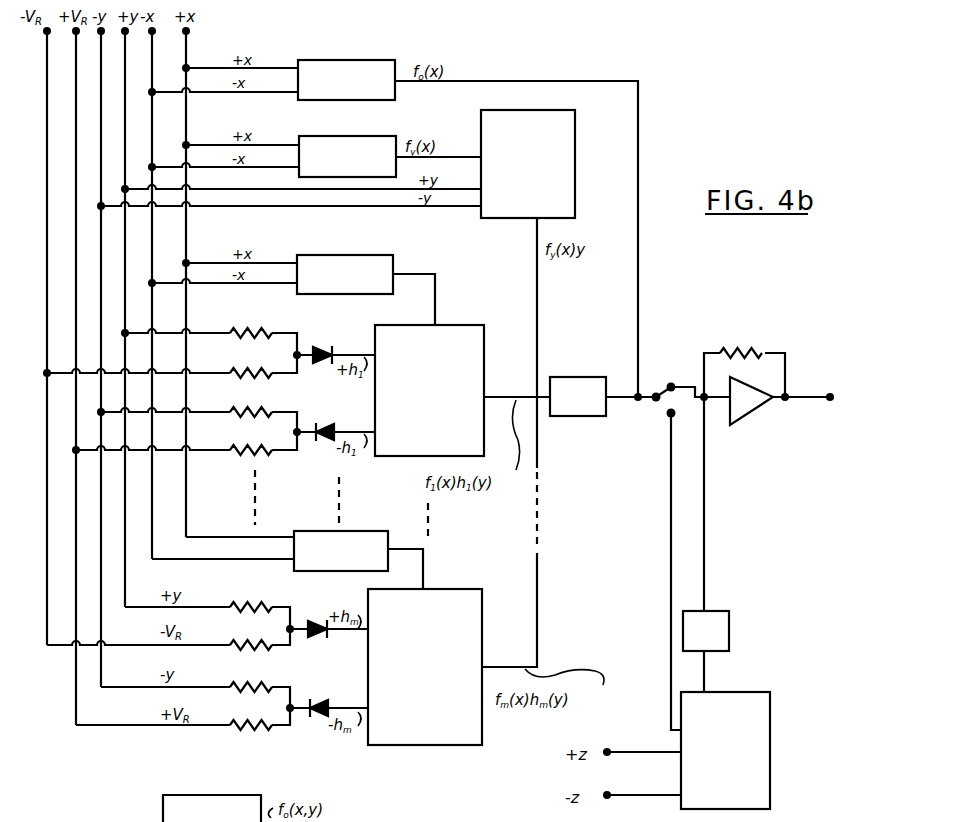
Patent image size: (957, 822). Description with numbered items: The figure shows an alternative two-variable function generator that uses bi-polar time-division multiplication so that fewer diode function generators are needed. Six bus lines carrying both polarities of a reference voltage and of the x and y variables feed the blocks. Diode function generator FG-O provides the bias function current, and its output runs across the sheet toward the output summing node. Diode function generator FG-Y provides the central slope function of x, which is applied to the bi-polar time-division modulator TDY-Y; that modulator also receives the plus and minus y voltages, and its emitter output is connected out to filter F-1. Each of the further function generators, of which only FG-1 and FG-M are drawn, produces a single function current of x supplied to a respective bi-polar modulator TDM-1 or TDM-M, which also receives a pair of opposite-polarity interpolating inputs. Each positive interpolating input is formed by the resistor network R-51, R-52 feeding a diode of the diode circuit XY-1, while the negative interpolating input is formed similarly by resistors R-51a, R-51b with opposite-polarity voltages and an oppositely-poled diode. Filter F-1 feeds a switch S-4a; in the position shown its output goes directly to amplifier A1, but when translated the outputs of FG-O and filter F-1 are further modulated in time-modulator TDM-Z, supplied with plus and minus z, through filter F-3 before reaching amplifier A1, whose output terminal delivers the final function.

The diode function generator FG-O is at (346, 80).
The diode function generator FG-Y is at (347, 156).
The bi-polar time-division modulator TDY-Y is at (528, 164).
The function generator FG-1 is at (345, 274).
The function generator FG-M is at (341, 551).
The bi-polar time-division modulator TDM-1 is at (429, 390).
The bi-polar time-division modulator TDM-M is at (425, 667).
The time-modulator TDM-Z is at (725, 750).
The resistor R-51 is at (228, 322).
The resistor R-52 is at (272, 362).
The resistor R-51a is at (278, 406).
The resistor R-51b is at (228, 462).
The diode network XY-1 is at (336, 383).
The filter F-1 is at (578, 396).
The filter F-3 is at (706, 631).
The switch S-4a is at (660, 407).
The amplifier A1 is at (767, 386).